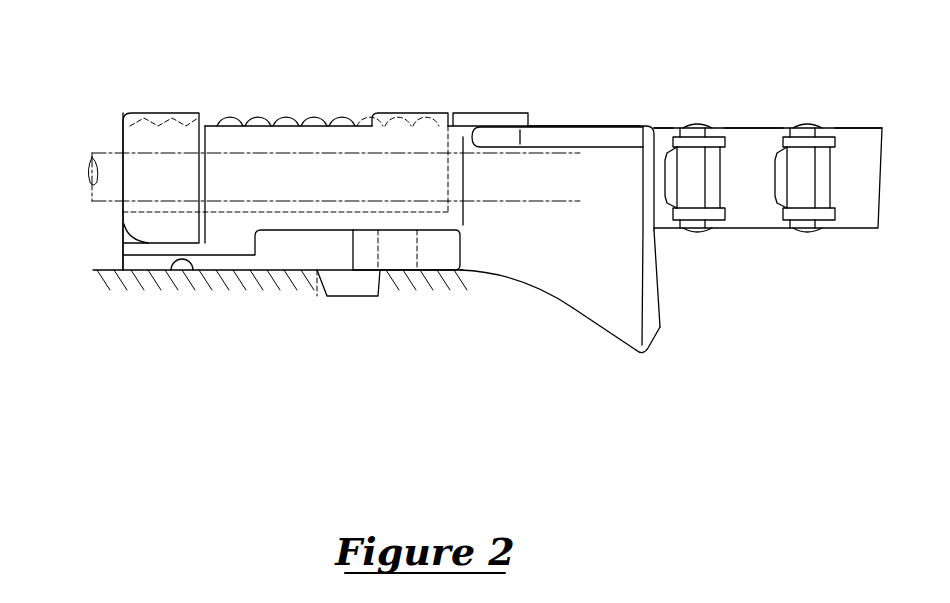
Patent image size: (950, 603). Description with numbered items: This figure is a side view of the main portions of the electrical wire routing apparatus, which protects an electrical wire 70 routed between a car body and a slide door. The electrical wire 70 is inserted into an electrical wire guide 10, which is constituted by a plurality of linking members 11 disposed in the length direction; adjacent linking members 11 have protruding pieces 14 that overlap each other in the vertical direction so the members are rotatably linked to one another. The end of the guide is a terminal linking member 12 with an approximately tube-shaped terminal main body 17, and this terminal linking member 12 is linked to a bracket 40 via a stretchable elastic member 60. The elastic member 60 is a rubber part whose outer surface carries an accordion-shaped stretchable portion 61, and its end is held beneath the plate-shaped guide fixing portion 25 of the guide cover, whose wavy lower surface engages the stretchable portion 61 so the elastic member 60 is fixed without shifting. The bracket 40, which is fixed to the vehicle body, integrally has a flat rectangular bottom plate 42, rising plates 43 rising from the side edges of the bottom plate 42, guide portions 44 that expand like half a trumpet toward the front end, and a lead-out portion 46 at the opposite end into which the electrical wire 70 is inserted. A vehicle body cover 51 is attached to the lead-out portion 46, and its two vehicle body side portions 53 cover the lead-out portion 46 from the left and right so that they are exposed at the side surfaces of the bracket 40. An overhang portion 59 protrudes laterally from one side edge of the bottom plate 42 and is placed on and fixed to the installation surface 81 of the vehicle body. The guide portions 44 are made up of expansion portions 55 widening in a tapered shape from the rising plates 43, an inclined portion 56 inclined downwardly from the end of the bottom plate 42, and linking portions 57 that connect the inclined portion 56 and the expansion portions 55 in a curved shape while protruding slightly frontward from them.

The electrical wire guide 10 is at (848, 230).
The linking members 11 is at (753, 128).
The terminal linking member 12 is at (506, 117).
The protruding pieces 14 is at (790, 128).
The terminal main body 17 is at (476, 117).
The guide fixing portion 25 is at (391, 113).
The bracket 40 is at (563, 126).
The bottom plate 42 is at (290, 272).
The rising plates 43 is at (309, 137).
The guide portions 44 is at (602, 325).
The lead-out portion 46 is at (125, 233).
The vehicle body cover 51 is at (165, 112).
The vehicle body side portions 53 is at (138, 143).
The expansion portions 55 is at (610, 172).
The inclined portion 56 is at (573, 308).
The linking portions 57 is at (655, 330).
The overhang portion 59 is at (437, 255).
The elastic member 60 is at (232, 118).
The stretchable portion 61 is at (260, 122).
The electrical wire 70 is at (95, 182).
The installation surface 81 is at (178, 272).